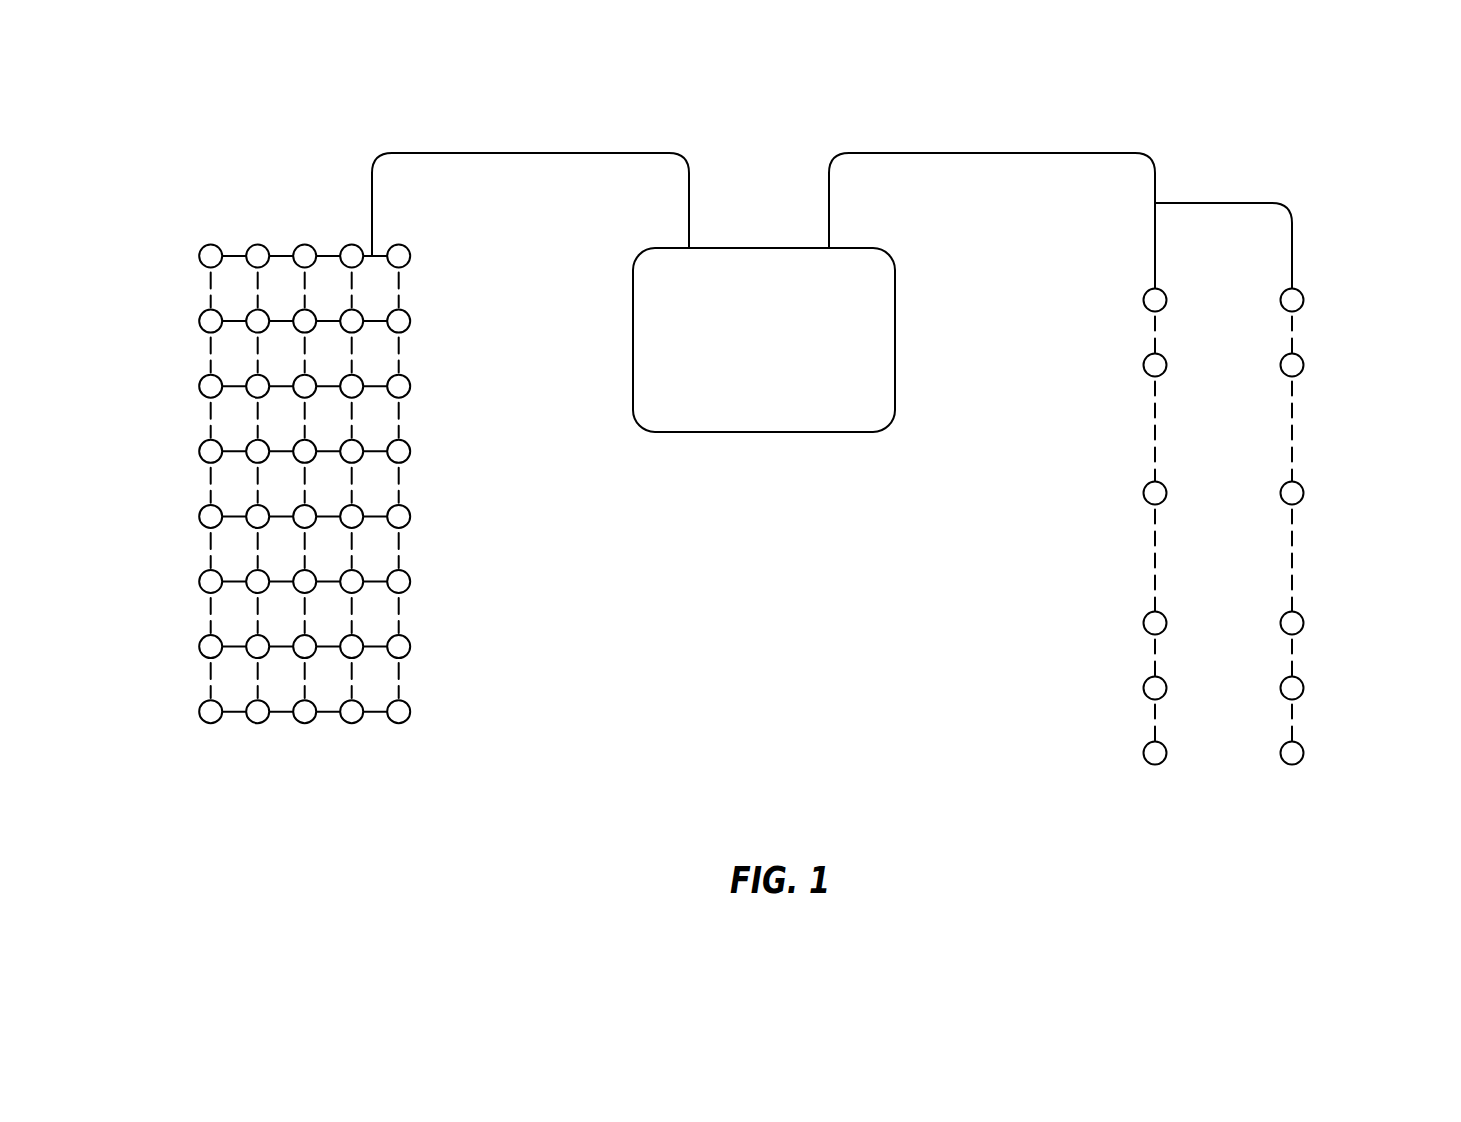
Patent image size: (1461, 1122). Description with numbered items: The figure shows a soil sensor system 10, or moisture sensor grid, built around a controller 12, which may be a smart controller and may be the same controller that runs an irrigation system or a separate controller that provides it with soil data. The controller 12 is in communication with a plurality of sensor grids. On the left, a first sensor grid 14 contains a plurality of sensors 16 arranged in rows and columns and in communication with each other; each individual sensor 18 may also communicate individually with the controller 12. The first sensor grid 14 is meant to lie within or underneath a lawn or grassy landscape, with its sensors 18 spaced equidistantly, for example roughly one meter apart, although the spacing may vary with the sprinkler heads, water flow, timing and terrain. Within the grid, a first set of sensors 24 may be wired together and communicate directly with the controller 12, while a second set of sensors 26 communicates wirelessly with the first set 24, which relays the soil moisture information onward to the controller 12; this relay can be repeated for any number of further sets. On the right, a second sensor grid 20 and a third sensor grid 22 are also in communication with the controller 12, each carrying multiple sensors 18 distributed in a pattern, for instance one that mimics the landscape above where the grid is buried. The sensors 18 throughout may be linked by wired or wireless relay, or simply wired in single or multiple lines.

The soil sensor system 10 is at (1014, 99).
The controller 12 is at (805, 417).
The first sensor grid 14 is at (292, 433).
The plurality of sensors 16 is at (292, 478).
The sensor 18 is at (401, 450).
The second sensor grid 20 is at (1251, 529).
The third sensor grid 22 is at (1146, 537).
The first set of sensors 24 is at (418, 228).
The second set of sensors 26 is at (418, 293).